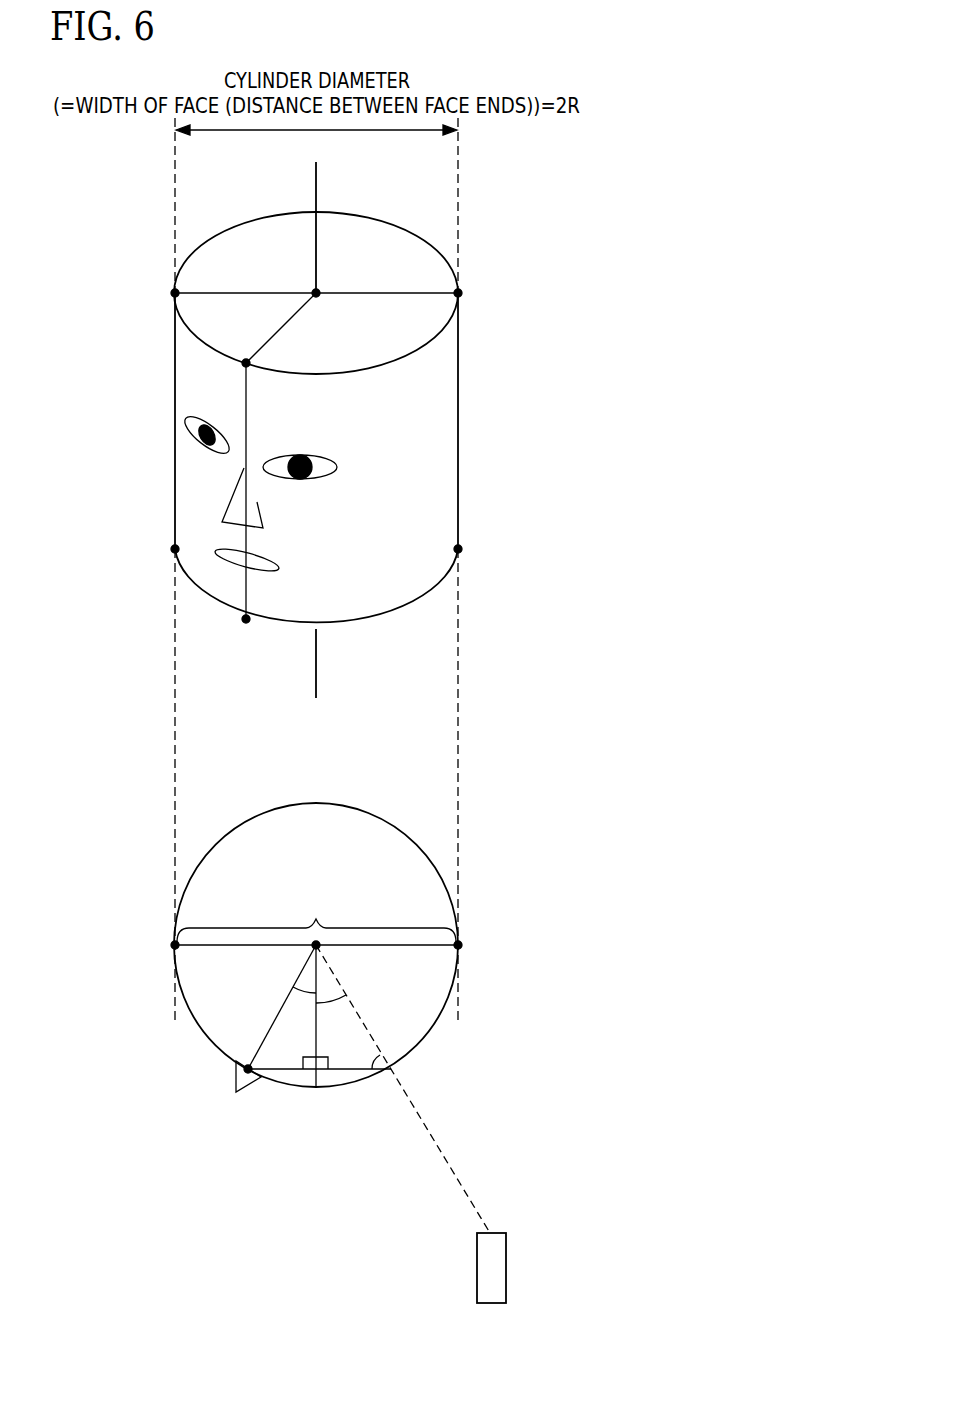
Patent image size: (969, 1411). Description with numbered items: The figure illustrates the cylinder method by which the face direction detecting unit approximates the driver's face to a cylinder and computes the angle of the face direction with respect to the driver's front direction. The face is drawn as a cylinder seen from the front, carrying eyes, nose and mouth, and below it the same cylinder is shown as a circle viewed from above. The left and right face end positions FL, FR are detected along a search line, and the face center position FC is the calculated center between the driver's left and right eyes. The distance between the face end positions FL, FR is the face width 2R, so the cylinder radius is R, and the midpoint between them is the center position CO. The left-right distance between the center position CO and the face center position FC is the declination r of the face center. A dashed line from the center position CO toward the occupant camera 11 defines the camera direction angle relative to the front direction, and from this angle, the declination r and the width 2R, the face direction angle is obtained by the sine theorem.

The occupant camera 11 is at (507, 1250).
The left face end position FL is at (172, 293).
The right face end position FR is at (461, 293).
The face center position FC is at (244, 363).
The center position CO is at (318, 292).
The face width 2R is at (316, 915).
The cylinder radius R is at (282, 1007).
The declination of the face center r is at (319, 1054).